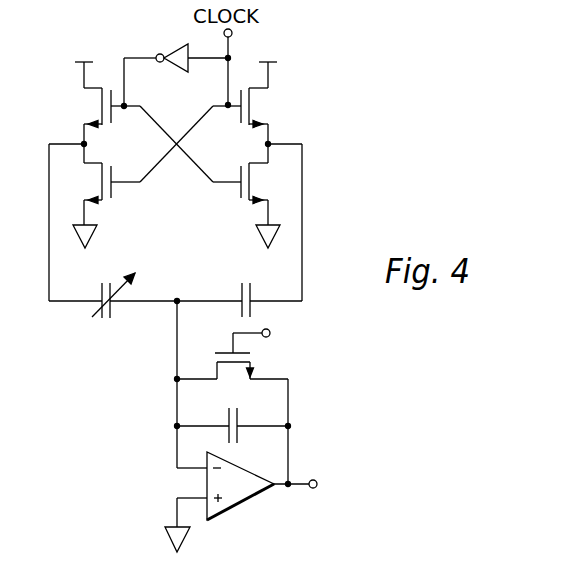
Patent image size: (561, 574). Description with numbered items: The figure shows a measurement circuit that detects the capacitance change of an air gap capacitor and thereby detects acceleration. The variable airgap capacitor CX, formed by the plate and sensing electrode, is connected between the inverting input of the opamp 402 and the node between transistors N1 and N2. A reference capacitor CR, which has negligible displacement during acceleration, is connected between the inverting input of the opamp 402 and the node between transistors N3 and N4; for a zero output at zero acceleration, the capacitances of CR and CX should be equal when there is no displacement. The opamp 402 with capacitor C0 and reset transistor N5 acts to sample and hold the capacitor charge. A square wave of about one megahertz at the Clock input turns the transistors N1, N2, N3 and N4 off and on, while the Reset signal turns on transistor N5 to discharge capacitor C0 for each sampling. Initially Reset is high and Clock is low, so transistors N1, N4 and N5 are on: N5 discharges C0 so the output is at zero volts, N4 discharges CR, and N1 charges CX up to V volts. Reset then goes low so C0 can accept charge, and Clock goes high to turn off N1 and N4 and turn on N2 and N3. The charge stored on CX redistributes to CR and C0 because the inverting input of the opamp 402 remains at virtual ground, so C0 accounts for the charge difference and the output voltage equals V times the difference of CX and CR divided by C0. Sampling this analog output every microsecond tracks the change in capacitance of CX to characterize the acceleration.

The opamp 402 is at (235, 493).
The transistor N1 is at (87, 92).
The transistor N2 is at (87, 205).
The transistor N3 is at (264, 92).
The transistor N4 is at (264, 205).
The reset transistor N5 is at (259, 350).
The variable airgap capacitor CX is at (104, 289).
The reference capacitor CR is at (231, 288).
The capacitor C_O C0 is at (217, 416).